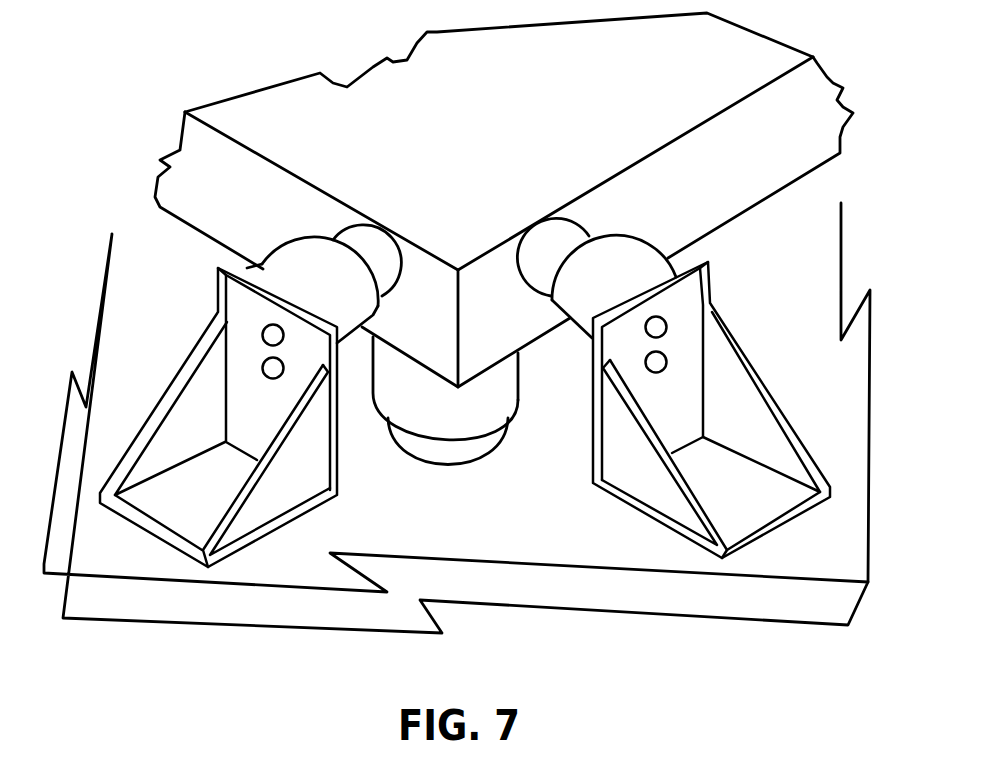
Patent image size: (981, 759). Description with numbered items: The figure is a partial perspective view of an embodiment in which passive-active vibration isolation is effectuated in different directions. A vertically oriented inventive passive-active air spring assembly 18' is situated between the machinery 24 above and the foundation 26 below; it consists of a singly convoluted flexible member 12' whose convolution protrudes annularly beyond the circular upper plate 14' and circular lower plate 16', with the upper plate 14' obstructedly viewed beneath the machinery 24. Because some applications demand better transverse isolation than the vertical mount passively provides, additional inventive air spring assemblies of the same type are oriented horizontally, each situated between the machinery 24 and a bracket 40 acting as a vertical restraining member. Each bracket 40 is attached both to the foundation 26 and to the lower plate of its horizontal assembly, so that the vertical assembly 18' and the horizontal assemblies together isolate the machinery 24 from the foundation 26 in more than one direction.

The machinery 24 is at (690, 55).
The foundation 26 is at (680, 598).
The bracket 40 is at (237, 293).
The flexible member 12' is at (432, 394).
The upper plate 14' is at (489, 328).
The lower plate 16' is at (448, 466).
The passive-active air spring assembly 18' is at (543, 405).